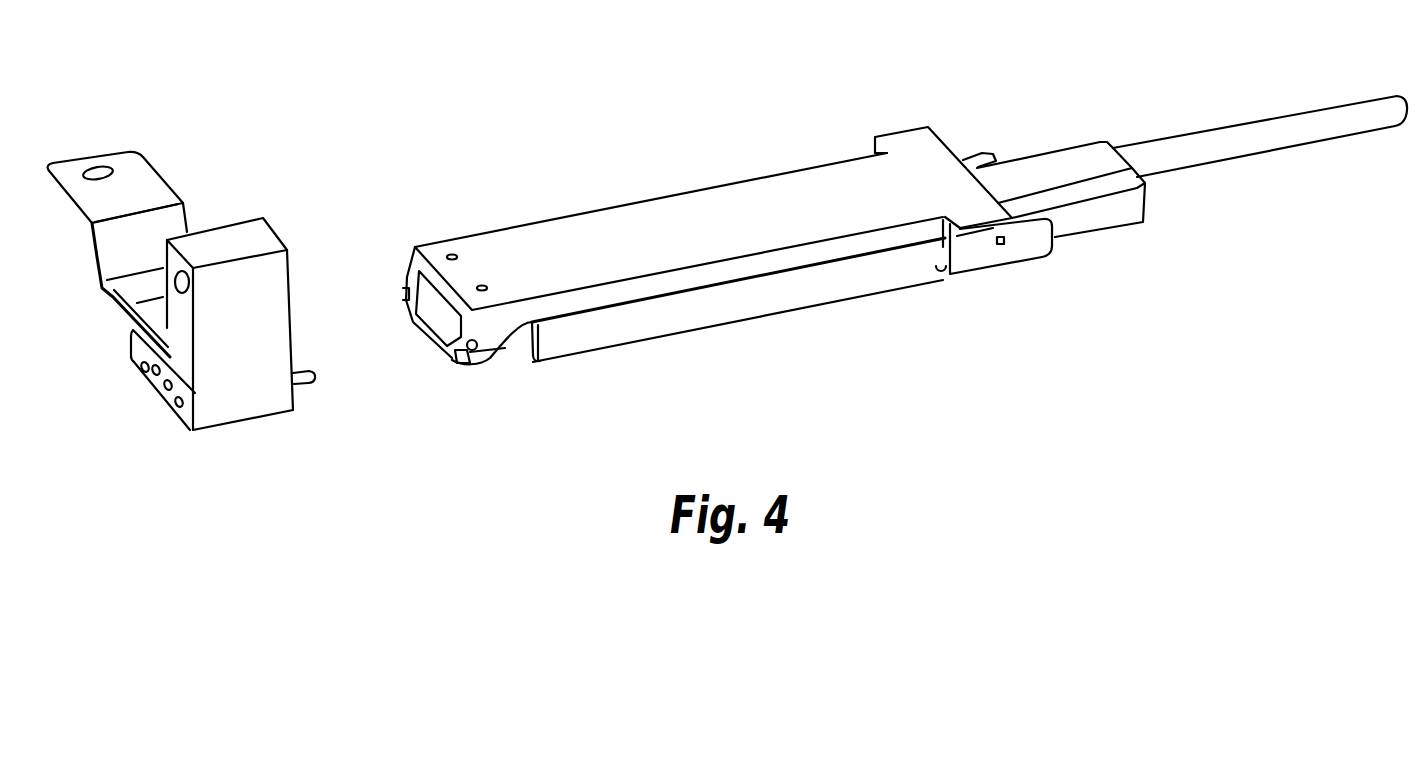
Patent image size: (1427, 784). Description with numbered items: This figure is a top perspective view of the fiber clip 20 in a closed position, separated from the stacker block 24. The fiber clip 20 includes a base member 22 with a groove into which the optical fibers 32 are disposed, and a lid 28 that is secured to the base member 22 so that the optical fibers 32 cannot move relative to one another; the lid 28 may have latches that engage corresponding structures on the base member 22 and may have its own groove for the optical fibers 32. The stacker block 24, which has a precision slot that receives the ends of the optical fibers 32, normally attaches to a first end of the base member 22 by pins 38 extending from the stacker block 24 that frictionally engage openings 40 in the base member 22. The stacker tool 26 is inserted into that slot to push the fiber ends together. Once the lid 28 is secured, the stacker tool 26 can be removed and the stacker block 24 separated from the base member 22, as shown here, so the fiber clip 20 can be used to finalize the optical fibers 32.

The fiber clip 20 is at (902, 42).
The base member 22 is at (1110, 298).
The stacker block 24 is at (238, 222).
The stacker tool 26 is at (133, 150).
The lid 28 is at (592, 233).
The optical fibers 32 is at (1275, 117).
The pins 38 is at (303, 390).
The openings 40 is at (443, 343).